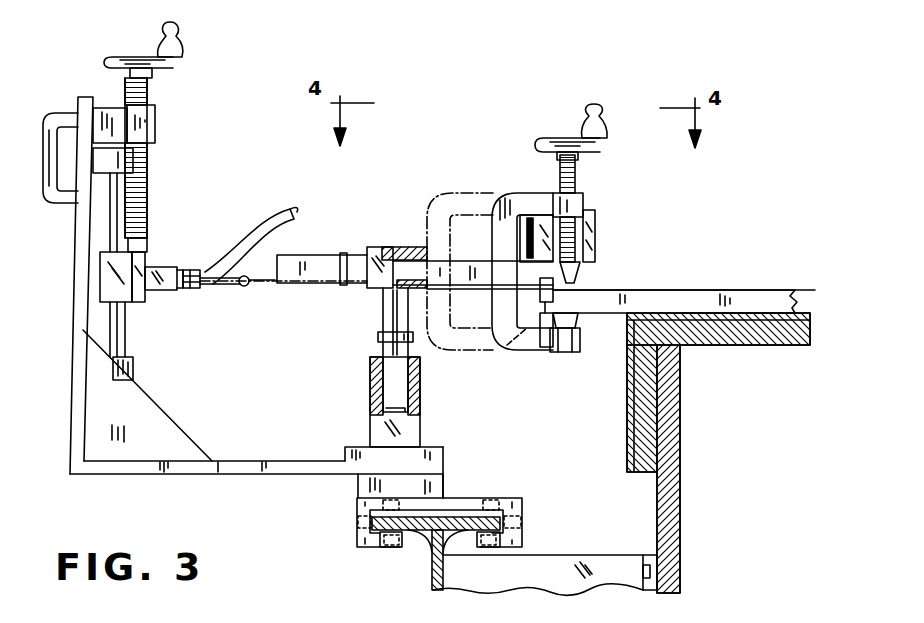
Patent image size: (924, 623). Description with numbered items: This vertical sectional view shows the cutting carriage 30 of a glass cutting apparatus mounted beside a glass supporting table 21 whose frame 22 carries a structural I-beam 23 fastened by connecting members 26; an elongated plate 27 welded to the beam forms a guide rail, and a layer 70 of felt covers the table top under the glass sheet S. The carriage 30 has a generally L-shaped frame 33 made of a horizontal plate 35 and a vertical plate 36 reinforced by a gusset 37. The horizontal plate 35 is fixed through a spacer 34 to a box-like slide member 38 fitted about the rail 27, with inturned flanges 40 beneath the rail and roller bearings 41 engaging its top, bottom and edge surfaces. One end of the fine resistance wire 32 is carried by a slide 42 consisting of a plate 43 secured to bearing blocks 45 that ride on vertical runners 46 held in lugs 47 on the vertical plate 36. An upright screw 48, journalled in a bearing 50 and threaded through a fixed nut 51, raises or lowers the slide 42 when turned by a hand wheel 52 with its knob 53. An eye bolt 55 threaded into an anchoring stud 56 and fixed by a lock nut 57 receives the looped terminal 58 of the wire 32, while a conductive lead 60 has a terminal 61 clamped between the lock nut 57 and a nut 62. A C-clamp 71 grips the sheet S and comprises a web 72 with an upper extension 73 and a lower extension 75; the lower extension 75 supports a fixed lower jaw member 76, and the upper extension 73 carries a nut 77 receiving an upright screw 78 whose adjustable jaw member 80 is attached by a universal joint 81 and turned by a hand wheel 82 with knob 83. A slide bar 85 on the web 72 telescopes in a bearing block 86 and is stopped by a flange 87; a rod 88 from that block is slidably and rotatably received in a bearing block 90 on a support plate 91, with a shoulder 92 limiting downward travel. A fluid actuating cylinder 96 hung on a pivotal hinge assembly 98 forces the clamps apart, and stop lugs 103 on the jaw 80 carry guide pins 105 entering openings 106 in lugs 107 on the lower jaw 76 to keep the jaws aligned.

The glass supporting table 21 is at (734, 352).
The frame 22 is at (639, 552).
The structural I-beam 23 is at (431, 567).
The connecting member 26 is at (568, 560).
The elongated plate 27 is at (426, 530).
The carriage 30 is at (292, 493).
The fine wire 32 is at (805, 289).
The L-shaped frame 33 is at (239, 313).
The spacer 34 is at (440, 487).
The horizontal plate 35 is at (220, 475).
The vertical plate 36 is at (75, 372).
The gusset 37 is at (170, 437).
The slide member 38 is at (440, 520).
The inturned flange 40 is at (378, 545).
The roller bearing 41 is at (512, 520).
The slide 42 is at (136, 208).
The plate 43 is at (143, 300).
The bearing block 45 is at (110, 268).
The runner 46 is at (117, 203).
The lug 47 is at (147, 160).
The upright screw 48 is at (148, 90).
The bearing 50 is at (147, 243).
The fixed nut 51 is at (155, 115).
The hand wheel 52 is at (110, 62).
The knob 53 is at (172, 30).
The eye bolt 55 is at (226, 279).
The anchoring stud 56 is at (158, 270).
The lock nut 57 is at (185, 290).
The terminal 58 is at (247, 290).
The conductive lead 60 is at (270, 206).
The terminal 61 is at (192, 270).
The nut 62 is at (197, 284).
The layer of non-abrasive material 70 is at (678, 306).
The C-clamp 71 is at (490, 191).
The web 72 is at (502, 256).
The upper horizontal extension 73 is at (558, 204).
The lower horizontal extension 75 is at (545, 243).
The fixed lower jaw member 76 is at (579, 329).
The nut 77 is at (584, 205).
The upright screw 78 is at (578, 172).
The adjustable jaw member 80 is at (580, 282).
The universal joint 81 is at (585, 265).
The hand wheel 82 is at (543, 139).
The knob 83 is at (590, 114).
The slide bar 85 is at (440, 263).
The bearing block 86 is at (393, 250).
The flange 87 is at (343, 254).
The rod 88 is at (390, 299).
The bearing block 90 is at (370, 370).
The support plate 91 is at (347, 448).
The shoulder 92 is at (378, 337).
The fluid actuating cylinder 96 is at (596, 225).
The pivotal hinge assembly 98 is at (527, 196).
The stop lug 103 is at (540, 290).
The guide pin 105 is at (556, 296).
The opening 106 is at (507, 346).
The lug 107 is at (540, 340).
The glass sheet S is at (717, 302).